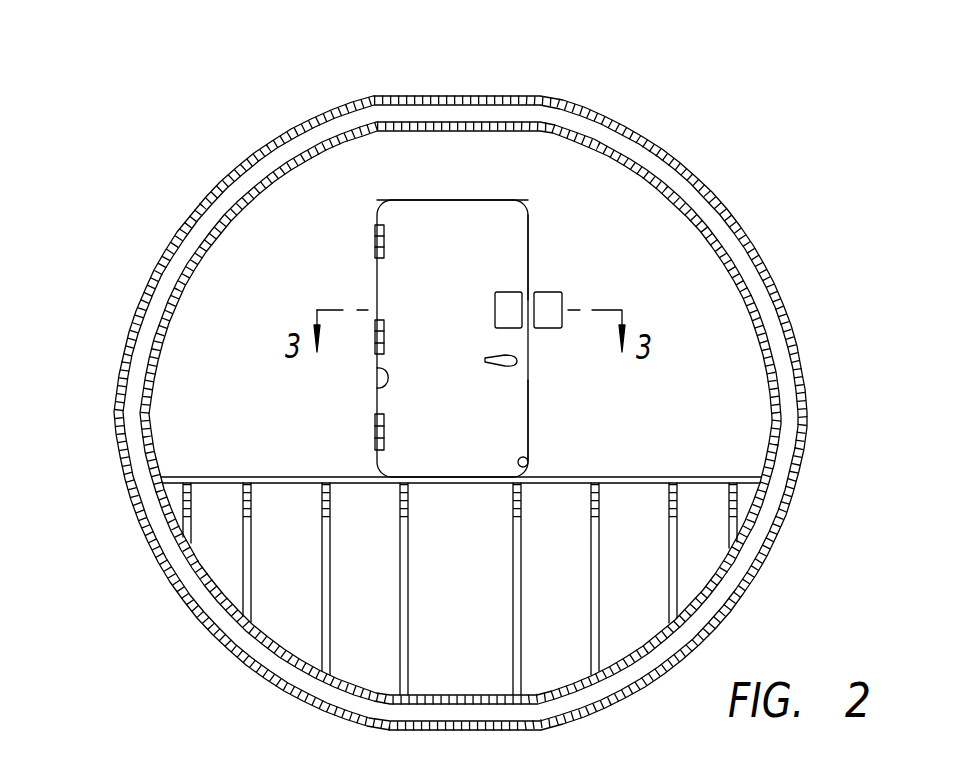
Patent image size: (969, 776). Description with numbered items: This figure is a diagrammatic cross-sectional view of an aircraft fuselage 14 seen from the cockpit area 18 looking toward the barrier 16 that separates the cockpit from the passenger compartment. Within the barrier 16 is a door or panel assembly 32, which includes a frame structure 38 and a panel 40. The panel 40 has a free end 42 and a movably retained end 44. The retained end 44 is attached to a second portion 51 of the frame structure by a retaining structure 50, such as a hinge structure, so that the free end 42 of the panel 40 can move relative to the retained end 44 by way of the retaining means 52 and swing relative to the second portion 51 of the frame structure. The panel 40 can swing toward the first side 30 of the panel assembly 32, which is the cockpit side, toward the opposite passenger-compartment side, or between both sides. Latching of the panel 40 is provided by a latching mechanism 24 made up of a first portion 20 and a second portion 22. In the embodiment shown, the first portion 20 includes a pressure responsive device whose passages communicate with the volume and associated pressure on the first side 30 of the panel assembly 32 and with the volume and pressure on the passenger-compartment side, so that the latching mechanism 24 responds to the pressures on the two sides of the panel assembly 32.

The fuselage 14 is at (128, 259).
The barrier 16 is at (656, 213).
The cockpit area 18 is at (184, 353).
The first portion 20 is at (547, 330).
The second portion 22 is at (510, 292).
The latching mechanism 24 is at (543, 357).
The first side 30 is at (253, 348).
The panel assembly 32 is at (443, 198).
The frame structure 38 is at (530, 218).
The panel 40 is at (493, 215).
The free end 42 is at (530, 423).
The retained end 44 is at (377, 413).
The retaining structure 50 is at (373, 244).
The second portion of the frame structure 51 is at (527, 470).
The retaining means 52 is at (378, 386).